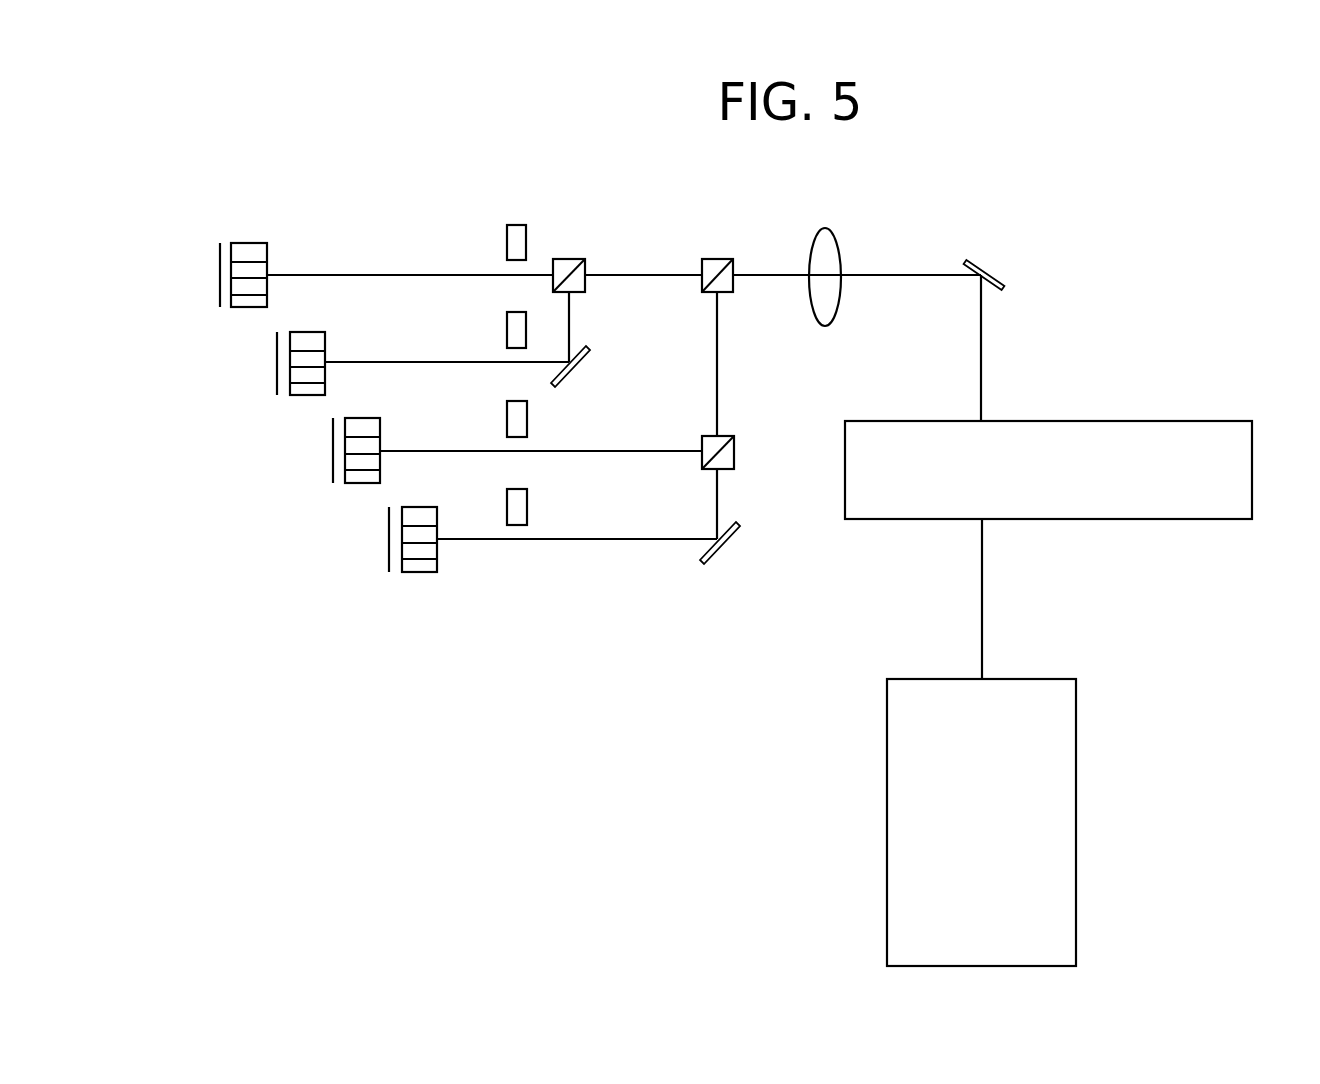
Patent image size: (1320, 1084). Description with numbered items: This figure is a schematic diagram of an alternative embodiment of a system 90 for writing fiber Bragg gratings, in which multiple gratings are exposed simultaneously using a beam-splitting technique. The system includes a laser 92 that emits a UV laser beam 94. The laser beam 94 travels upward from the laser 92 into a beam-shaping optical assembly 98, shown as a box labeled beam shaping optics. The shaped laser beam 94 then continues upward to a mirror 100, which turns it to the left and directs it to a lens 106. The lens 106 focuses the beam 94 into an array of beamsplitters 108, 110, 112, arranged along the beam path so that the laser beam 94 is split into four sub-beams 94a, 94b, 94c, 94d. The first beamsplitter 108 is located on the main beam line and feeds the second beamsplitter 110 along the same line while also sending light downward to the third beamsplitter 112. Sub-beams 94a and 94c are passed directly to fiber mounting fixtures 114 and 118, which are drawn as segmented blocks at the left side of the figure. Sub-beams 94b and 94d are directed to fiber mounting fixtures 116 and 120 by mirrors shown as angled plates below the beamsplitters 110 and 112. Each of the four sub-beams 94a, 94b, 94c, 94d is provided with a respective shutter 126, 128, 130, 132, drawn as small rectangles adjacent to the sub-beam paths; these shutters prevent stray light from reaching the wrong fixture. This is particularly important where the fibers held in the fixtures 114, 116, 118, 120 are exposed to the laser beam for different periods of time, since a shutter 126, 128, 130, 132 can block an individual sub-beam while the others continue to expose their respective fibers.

The system 90 is at (1262, 276).
The laser 92 is at (1076, 776).
The laser beam 94 is at (982, 600).
The sub-beam 94a is at (350, 274).
The sub-beam 94b is at (357, 362).
The sub-beam 94c is at (604, 451).
The sub-beam 94d is at (607, 539).
The beam-shaping optical assembly 98 is at (1128, 421).
The mirror 100 is at (977, 263).
The lens 106 is at (832, 234).
The beamsplitter 108 is at (716, 259).
The beamsplitter 110 is at (565, 260).
The beamsplitter 112 is at (735, 451).
The fiber mounting fixture 114 is at (250, 243).
The fiber mounting fixture 116 is at (306, 332).
The fiber mounting fixture 118 is at (362, 484).
The fiber mounting fixture 120 is at (416, 573).
The shutter 126 is at (517, 225).
The shutter 128 is at (507, 331).
The shutter 130 is at (507, 420).
The shutter 132 is at (507, 505).